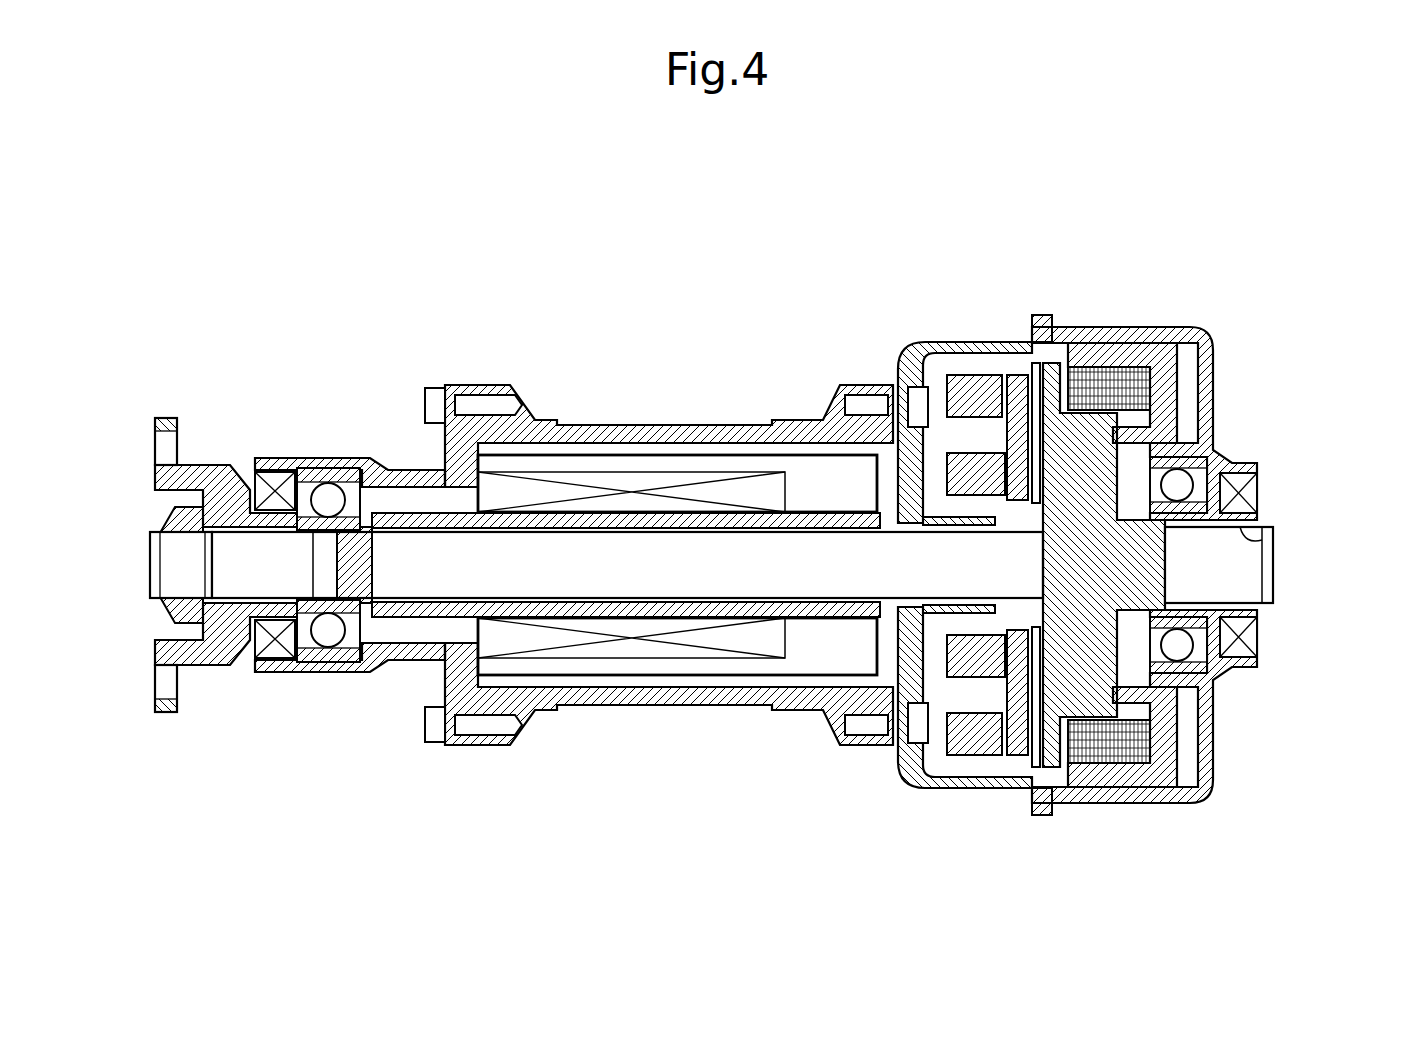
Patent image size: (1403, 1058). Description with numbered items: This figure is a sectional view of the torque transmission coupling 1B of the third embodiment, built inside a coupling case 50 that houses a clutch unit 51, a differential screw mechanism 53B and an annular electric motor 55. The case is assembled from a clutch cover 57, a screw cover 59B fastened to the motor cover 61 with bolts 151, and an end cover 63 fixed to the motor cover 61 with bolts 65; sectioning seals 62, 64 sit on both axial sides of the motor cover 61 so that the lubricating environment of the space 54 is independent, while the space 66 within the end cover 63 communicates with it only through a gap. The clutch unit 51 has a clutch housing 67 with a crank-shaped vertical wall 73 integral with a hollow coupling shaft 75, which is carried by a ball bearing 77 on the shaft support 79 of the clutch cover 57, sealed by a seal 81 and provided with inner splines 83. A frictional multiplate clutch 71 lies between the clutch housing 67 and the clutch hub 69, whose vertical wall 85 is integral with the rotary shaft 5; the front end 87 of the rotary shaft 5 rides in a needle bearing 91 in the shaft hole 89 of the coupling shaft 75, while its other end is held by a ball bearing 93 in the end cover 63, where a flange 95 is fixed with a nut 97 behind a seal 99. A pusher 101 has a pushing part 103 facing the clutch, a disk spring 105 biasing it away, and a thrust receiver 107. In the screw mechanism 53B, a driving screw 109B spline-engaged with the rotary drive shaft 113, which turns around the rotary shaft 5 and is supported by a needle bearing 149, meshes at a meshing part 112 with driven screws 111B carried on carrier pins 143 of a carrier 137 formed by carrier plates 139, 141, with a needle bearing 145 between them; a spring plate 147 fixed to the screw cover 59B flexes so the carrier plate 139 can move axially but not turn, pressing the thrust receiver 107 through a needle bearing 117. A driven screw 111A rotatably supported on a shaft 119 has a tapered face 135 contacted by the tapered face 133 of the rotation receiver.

The torque transmission coupling 1B is at (1158, 210).
The rotary shaft 5 is at (570, 560).
The coupling case 50 is at (1206, 330).
The clutch unit 51 is at (1214, 360).
The differential screw mechanism 53B is at (960, 375).
The space 54 is at (1040, 790).
The electric motor 55 is at (653, 455).
The clutch cover 57 is at (1213, 400).
The screw cover 59B is at (985, 375).
The motor cover 61 is at (727, 423).
The sectioning seal 62 is at (870, 625).
The end cover 63 is at (380, 460).
The sectioning seal 64 is at (450, 665).
The bolts 65 is at (435, 388).
The space 66 is at (372, 660).
The clutch housing 67 is at (1140, 345).
The clutch hub 69 is at (1162, 440).
The frictional multiplate clutch 71 is at (1190, 327).
The vertical wall 73 is at (1172, 422).
The coupling shaft 75 is at (1258, 515).
The ball bearing 77 is at (1217, 460).
The shaft support 79 is at (1242, 480).
The seal 81 is at (1182, 482).
The inner splines 83 is at (1274, 540).
The vertical wall 85 is at (1075, 680).
The front end 87 is at (1205, 570).
The shaft hole 89 is at (1245, 627).
The needle bearing 91 is at (1252, 545).
The ball bearing 93 is at (328, 468).
The flange 95 is at (165, 418).
The nut 97 is at (190, 500).
The seal 99 is at (272, 472).
The pusher 101 is at (1038, 380).
The pushing part 103 is at (1080, 362).
The disk spring 105 is at (1060, 380).
The thrust receiver 107 is at (1031, 500).
The driving screw 109B is at (945, 650).
The driven screw 111A is at (965, 777).
The driven screws 111B is at (935, 353).
The meshing part 112 is at (950, 765).
The rotary drive shaft 113 is at (775, 495).
The needle bearing 117 is at (1014, 628).
The shaft 119 is at (920, 700).
The tapered face 133 is at (905, 480).
The tapered face 135 is at (912, 505).
The carrier 137 is at (1040, 315).
The carrier plate 139 is at (1016, 375).
The carrier plate 141 is at (915, 390).
The carrier pins 143 is at (975, 375).
The needle bearing 145 is at (1000, 375).
The spring plate 147 is at (1040, 345).
The needle bearing 149 is at (905, 640).
The bolts 151 is at (898, 372).